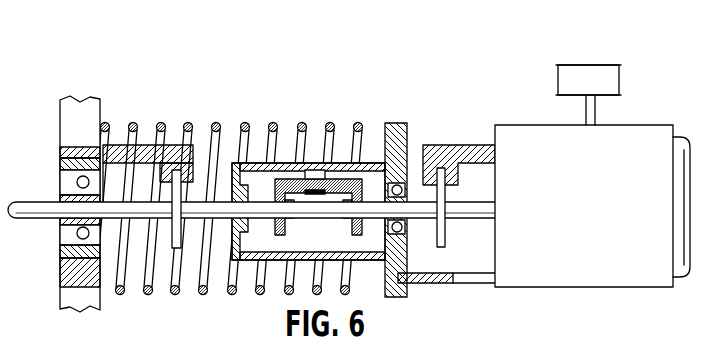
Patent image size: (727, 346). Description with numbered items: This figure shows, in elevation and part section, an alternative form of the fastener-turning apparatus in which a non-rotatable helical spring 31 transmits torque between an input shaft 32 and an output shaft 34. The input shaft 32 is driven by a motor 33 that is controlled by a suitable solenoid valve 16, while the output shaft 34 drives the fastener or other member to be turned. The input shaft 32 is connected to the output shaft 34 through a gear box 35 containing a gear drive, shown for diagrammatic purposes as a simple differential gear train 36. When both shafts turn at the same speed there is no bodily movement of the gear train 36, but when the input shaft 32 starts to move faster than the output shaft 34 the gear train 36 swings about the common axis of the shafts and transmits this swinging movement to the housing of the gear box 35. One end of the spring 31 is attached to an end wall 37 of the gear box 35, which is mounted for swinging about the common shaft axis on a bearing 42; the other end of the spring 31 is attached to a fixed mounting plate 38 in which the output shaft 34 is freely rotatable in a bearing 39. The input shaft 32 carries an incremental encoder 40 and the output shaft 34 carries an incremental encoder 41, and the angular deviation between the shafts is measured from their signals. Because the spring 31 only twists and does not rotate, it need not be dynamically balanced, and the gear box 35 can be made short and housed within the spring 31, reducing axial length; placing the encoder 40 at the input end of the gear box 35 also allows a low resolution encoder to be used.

The solenoid valve 16 is at (598, 82).
The helical spring 31 is at (275, 128).
The input shaft 32 is at (473, 208).
The motor 33 is at (617, 253).
The output shaft 34 is at (52, 208).
The gear box 35 is at (275, 262).
The differential gear train 36 is at (337, 193).
The end wall 37 is at (396, 140).
The fixed mounting plate 38 is at (83, 125).
The bearing 39 is at (66, 243).
The incremental encoder 40 is at (442, 225).
The incremental encoder 41 is at (177, 222).
The bearing 42 is at (407, 233).